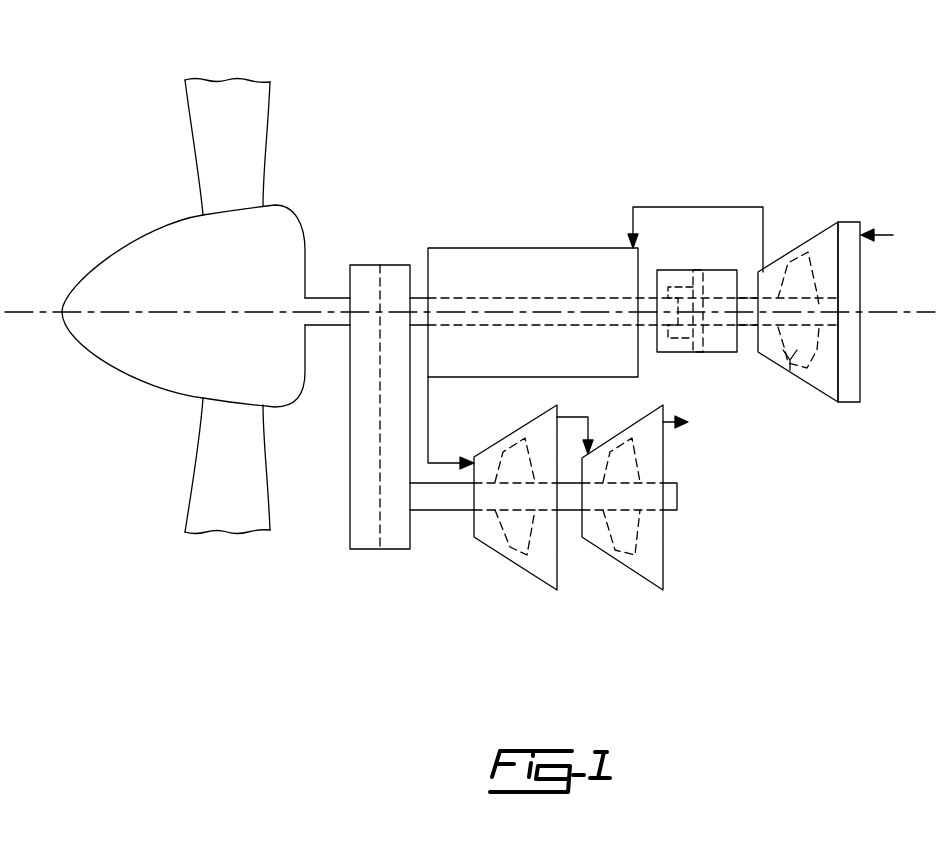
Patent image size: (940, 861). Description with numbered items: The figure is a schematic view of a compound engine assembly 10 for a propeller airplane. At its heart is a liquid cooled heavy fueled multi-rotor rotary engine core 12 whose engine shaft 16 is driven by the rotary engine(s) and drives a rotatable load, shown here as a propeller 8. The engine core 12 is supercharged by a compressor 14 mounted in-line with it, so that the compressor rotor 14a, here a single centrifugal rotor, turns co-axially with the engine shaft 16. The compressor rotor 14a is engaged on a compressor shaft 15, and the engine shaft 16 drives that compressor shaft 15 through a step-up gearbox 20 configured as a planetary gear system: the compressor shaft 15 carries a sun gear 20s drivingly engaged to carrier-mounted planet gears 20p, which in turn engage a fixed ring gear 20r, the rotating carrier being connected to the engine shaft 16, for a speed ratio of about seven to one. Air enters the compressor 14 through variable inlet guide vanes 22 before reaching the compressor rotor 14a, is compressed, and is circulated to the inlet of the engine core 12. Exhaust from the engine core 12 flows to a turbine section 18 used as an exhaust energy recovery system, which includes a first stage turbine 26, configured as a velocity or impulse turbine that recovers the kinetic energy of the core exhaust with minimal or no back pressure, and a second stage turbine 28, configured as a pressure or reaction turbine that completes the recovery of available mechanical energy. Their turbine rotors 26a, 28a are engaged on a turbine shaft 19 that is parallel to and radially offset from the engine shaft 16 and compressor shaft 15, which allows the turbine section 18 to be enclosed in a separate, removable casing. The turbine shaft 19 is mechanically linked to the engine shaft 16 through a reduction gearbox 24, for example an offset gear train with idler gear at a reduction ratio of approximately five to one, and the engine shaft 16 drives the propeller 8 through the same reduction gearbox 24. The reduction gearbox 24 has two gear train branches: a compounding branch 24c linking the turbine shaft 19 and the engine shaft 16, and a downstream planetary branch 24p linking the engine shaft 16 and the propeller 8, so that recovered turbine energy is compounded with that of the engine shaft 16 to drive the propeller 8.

The propeller 8 is at (245, 113).
The compound engine assembly 10 is at (666, 104).
The engine core 12 is at (512, 268).
The compressor 14 is at (816, 228).
The compressor rotor 14a is at (786, 375).
The compressor shaft 15 is at (749, 320).
The engine shaft 16 is at (455, 298).
The turbine section 18 is at (653, 608).
The turbine shaft 19 is at (447, 497).
The step-up gearbox 20 is at (711, 285).
The planet gears 20p is at (710, 287).
The ring gear 20r is at (697, 285).
The sun gear 20s is at (708, 353).
The variable inlet guide vanes 22 is at (850, 224).
The reduction gearbox 24 is at (370, 265).
The compounding branch 24c is at (397, 530).
The downstream planetary branch 24p is at (367, 532).
The first stage turbine 26 is at (496, 562).
The turbine rotor 26a is at (505, 545).
The second stage turbine 28 is at (672, 602).
The turbine rotor 28a is at (645, 552).